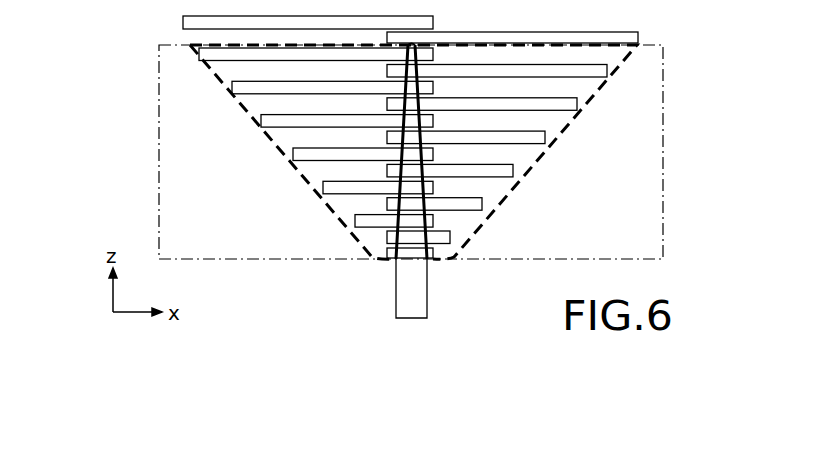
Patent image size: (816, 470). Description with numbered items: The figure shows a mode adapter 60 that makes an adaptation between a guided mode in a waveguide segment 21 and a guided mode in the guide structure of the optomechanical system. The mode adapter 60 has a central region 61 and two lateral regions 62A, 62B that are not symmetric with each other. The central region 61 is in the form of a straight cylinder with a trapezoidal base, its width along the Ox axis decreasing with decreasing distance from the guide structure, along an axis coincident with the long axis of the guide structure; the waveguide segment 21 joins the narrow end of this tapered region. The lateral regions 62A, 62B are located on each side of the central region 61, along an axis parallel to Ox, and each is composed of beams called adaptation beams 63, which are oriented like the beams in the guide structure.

The mode adapter 60 is at (663, 62).
The central region 61 is at (413, 223).
The lateral region 62A is at (212, 80).
The lateral region 62B is at (562, 138).
The adaptation beams 63 is at (265, 120).
The waveguide segment 21 is at (405, 289).